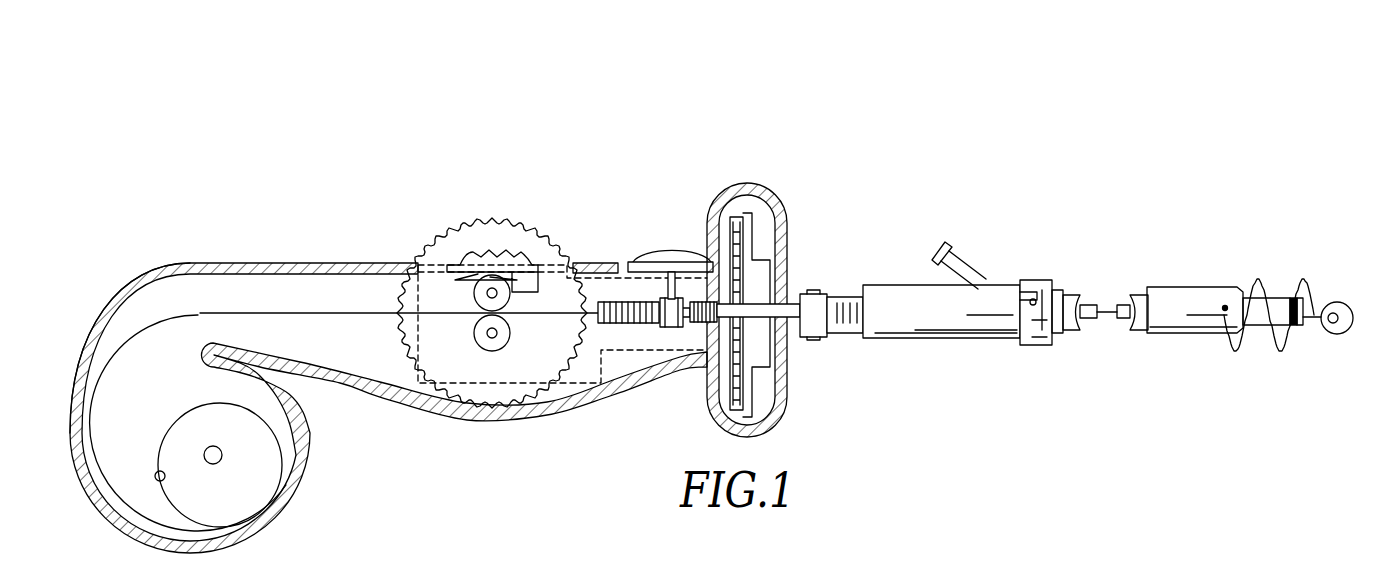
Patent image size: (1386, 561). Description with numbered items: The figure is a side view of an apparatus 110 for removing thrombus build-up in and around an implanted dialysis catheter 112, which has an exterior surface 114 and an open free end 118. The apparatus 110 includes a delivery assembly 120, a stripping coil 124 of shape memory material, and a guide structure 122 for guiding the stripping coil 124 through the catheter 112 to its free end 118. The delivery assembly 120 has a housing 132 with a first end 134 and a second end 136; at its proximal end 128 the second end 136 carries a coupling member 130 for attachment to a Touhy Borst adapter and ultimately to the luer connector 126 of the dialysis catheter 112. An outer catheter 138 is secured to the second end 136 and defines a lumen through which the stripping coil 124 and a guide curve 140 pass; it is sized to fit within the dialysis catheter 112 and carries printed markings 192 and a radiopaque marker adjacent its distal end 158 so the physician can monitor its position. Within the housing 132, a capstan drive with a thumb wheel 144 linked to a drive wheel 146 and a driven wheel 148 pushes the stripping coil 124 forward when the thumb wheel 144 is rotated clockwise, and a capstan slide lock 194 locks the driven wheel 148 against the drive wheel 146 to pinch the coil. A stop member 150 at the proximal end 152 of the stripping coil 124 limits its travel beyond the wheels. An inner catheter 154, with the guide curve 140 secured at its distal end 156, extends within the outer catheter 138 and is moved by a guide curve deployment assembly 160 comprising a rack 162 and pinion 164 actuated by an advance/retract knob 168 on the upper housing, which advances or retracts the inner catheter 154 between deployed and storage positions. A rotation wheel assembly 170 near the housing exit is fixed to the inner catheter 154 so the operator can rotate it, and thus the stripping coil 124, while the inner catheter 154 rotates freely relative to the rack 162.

The apparatus 110 is at (177, 154).
The delivery assembly 120 is at (268, 248).
The housing 132 is at (104, 318).
The stripping coil 124 is at (206, 308).
The proximal end of the stripping coil 152 is at (98, 432).
The first end 134 is at (313, 444).
The stop member 150 is at (165, 478).
The thumb wheel 144 is at (492, 220).
The capstan slide lock 194 is at (523, 263).
The driven wheel 148 is at (523, 298).
The drive wheel 146 is at (477, 340).
The rack 162 is at (627, 330).
The pinion 164 is at (670, 335).
The advance/retract knob 168 is at (657, 258).
The guide curve deployment assembly 160 is at (657, 228).
The second end 136 is at (727, 184).
The rotation wheel assembly 170 is at (746, 209).
The inner catheter 154 is at (752, 313).
The coupling member 130 is at (797, 345).
The printed markings 192 is at (853, 293).
The proximal end of the delivery assembly 128 is at (845, 365).
The guide structure 122 is at (896, 259).
The luer connector 126 is at (996, 272).
The outer catheter 138 is at (1093, 330).
The exterior surface 114 is at (1165, 288).
The dialysis catheter 112 is at (1168, 325).
The open free end 118 is at (1247, 296).
The distal end of the outer catheter 158 is at (1285, 283).
The distal end of the inner catheter 156 is at (1347, 298).
The guide curve 140 is at (1334, 342).